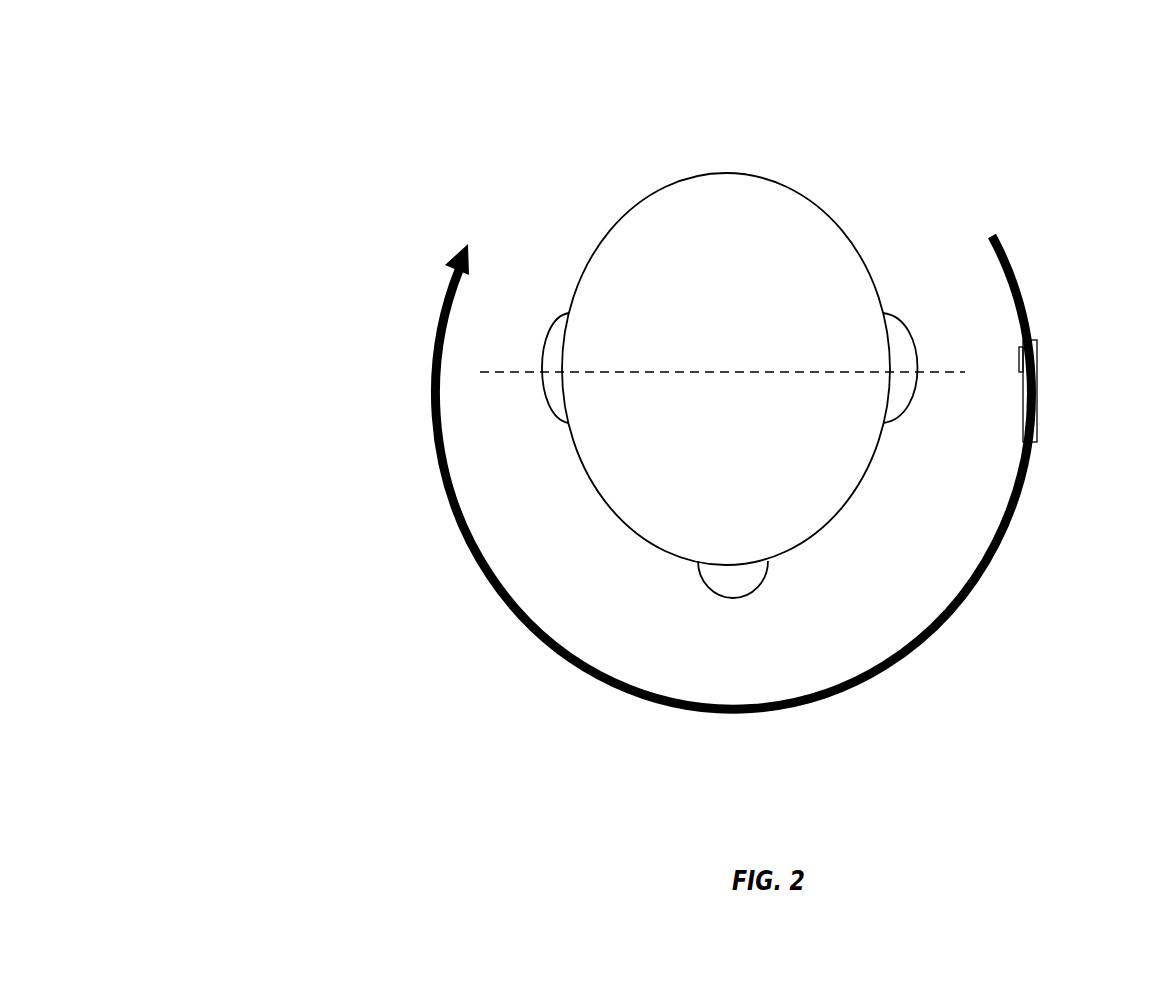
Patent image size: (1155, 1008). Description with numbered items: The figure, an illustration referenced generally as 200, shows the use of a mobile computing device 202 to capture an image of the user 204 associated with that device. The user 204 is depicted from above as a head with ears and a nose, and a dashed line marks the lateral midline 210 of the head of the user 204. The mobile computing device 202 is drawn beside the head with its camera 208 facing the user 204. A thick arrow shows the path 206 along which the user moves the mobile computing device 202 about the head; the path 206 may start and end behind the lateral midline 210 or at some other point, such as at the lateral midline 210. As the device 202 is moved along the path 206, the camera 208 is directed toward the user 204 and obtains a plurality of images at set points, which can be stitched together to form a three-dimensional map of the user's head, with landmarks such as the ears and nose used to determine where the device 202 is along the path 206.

The system / arrangement 200 is at (292, 118).
The mobile computing device 202 is at (1037, 367).
The user 204 is at (734, 304).
The path 206 is at (1026, 515).
The camera 208 is at (1020, 359).
The lateral midline 210 is at (818, 371).